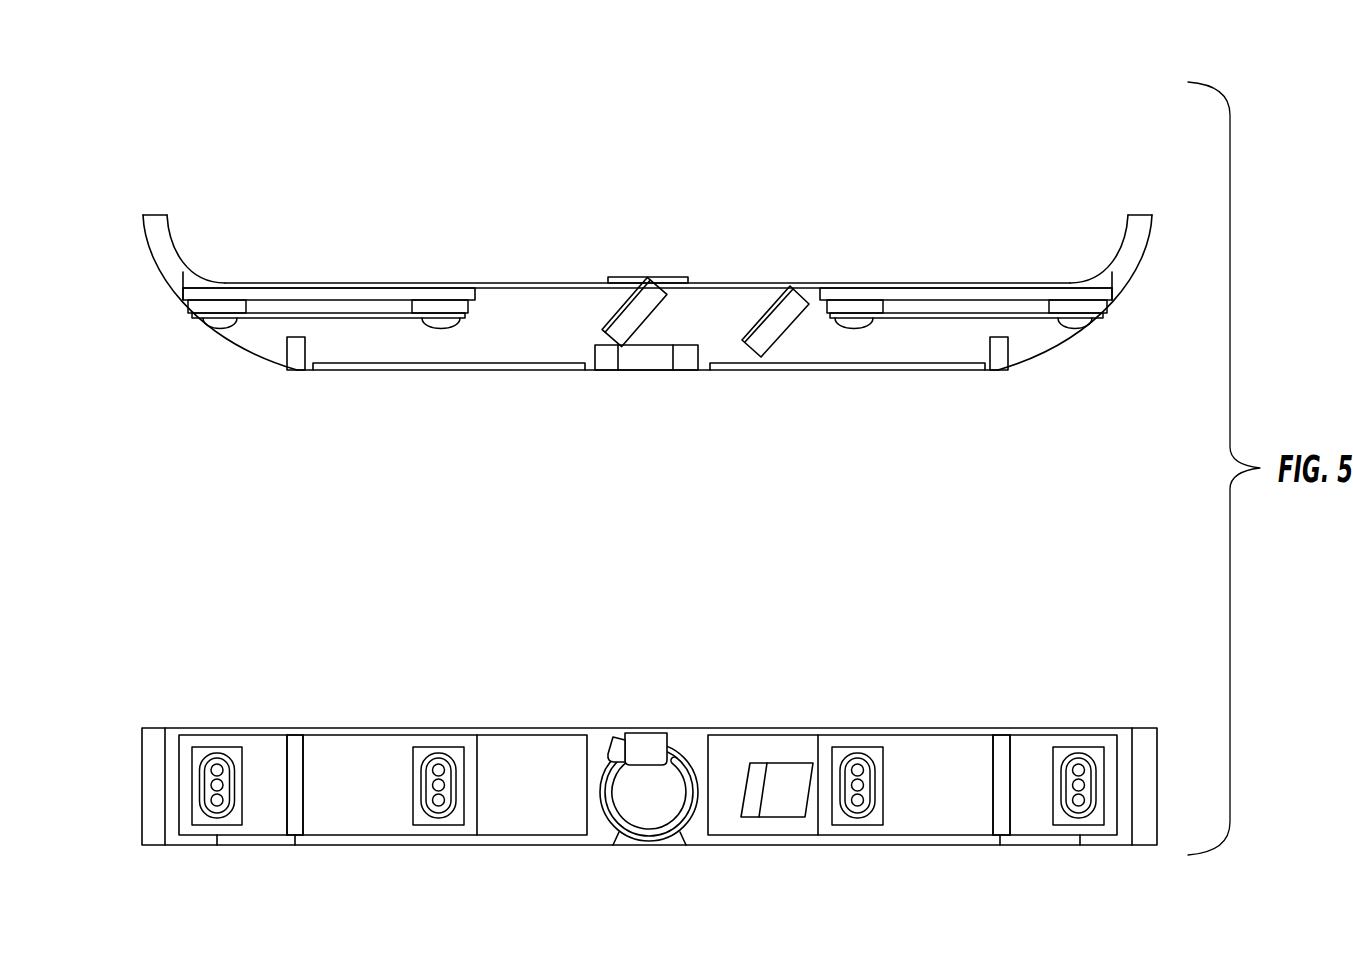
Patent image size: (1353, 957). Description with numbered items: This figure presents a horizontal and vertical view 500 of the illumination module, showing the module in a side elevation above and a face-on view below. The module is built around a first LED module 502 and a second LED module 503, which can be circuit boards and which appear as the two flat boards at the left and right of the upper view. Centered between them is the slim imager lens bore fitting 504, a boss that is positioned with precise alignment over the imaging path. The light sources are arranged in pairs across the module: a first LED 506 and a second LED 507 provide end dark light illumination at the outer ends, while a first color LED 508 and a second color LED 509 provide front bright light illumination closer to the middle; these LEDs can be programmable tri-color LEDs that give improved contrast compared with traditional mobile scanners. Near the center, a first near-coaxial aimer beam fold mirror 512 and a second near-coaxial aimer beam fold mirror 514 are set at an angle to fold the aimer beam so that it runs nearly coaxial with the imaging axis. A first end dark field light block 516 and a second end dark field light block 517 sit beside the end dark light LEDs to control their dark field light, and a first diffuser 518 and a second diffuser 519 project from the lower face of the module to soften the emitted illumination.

The horizontal and vertical view 500 is at (203, 150).
The first LED module 502 is at (330, 282).
The second LED module 503 is at (988, 281).
The slim imager lens bore fitting 504 is at (627, 276).
The first LED for end dark light illumination 506 is at (206, 742).
The second LED for end dark light illumination 507 is at (1078, 748).
The first color LED for front bright light illumination 508 is at (455, 322).
The second color LED for front bright light illumination 509 is at (855, 748).
The first near-coaxial aimer beam fold mirror 512 is at (673, 302).
The second near-coaxial aimer beam fold mirror 514 is at (763, 362).
The first end dark field light block 516 is at (998, 727).
The second end dark field light block 517 is at (297, 728).
The first diffuser 518 is at (932, 374).
The second diffuser 519 is at (409, 374).